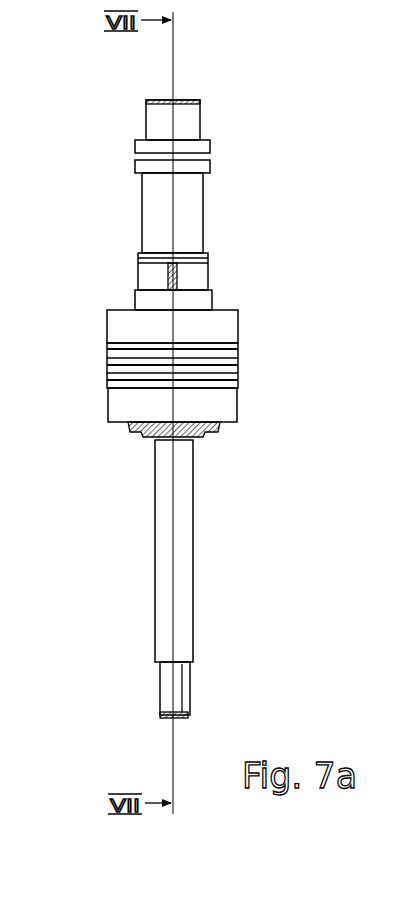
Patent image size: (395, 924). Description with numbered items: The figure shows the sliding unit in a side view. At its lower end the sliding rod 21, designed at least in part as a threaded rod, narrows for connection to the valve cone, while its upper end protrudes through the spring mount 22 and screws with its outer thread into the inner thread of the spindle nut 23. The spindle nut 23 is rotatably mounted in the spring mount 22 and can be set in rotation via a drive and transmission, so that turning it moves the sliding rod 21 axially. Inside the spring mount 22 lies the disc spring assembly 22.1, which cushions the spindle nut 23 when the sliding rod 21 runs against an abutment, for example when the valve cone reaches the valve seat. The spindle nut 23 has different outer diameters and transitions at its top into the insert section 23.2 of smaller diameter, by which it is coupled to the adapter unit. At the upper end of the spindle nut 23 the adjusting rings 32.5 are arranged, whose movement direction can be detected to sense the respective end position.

The sliding rod 21 is at (185, 595).
The spring mount 22 is at (185, 373).
The disc spring assembly 22.1 is at (238, 358).
The spindle nut 23 is at (163, 217).
The insert section 23.2 is at (190, 125).
The adjusting rings 32.5 is at (142, 148).